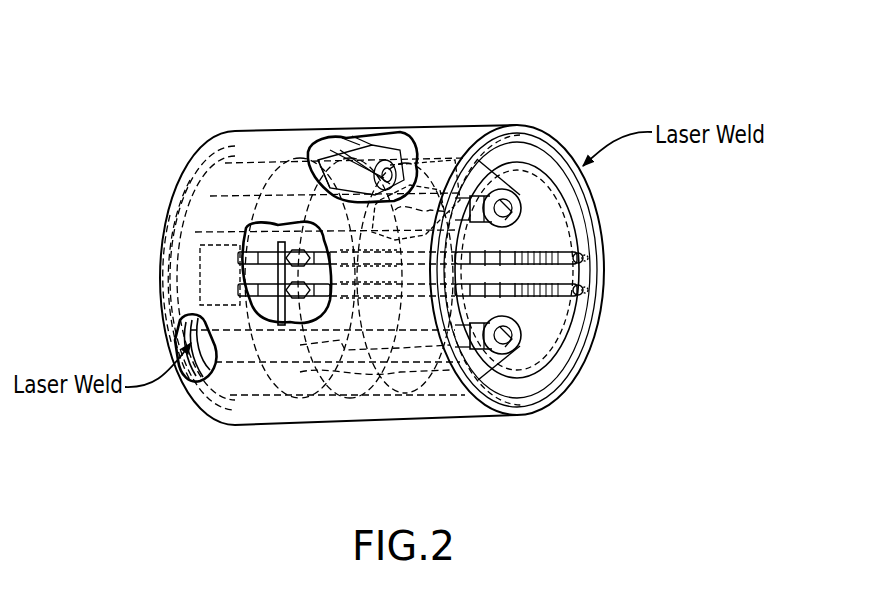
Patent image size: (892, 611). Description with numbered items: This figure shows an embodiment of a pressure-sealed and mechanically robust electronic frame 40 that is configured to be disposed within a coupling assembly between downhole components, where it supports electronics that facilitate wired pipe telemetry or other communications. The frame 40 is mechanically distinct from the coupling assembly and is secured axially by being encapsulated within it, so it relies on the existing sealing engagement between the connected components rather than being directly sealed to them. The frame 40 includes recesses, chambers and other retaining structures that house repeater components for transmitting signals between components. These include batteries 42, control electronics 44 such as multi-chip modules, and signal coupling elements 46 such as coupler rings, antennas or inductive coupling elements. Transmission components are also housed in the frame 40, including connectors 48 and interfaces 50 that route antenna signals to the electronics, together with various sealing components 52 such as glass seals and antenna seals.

The electronic frame 40 is at (97, 45).
The batteries 42 is at (367, 128).
The control electronics 44 is at (380, 155).
The signal coupling elements 46 is at (183, 224).
The connectors 48 is at (620, 217).
The interfaces 50 is at (298, 282).
The sealing components 52 is at (660, 445).